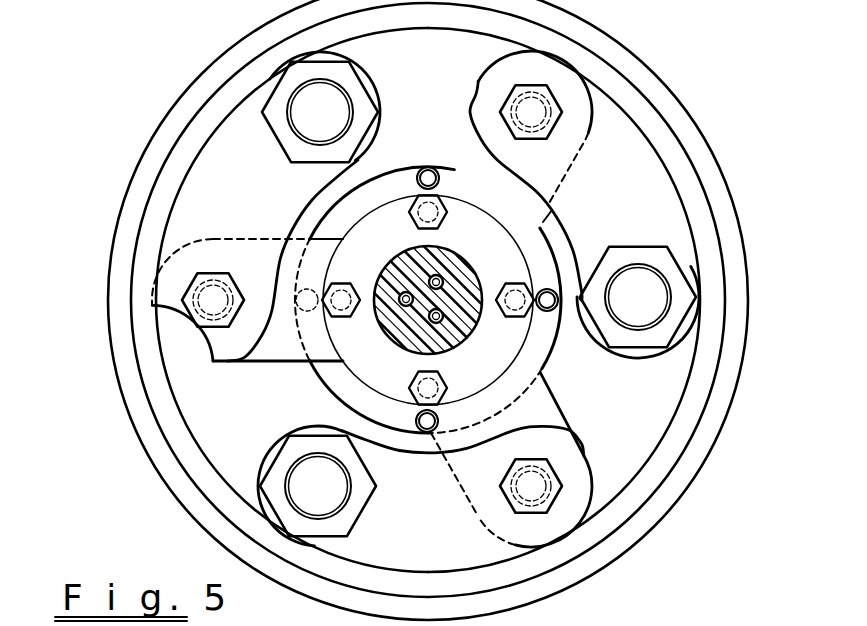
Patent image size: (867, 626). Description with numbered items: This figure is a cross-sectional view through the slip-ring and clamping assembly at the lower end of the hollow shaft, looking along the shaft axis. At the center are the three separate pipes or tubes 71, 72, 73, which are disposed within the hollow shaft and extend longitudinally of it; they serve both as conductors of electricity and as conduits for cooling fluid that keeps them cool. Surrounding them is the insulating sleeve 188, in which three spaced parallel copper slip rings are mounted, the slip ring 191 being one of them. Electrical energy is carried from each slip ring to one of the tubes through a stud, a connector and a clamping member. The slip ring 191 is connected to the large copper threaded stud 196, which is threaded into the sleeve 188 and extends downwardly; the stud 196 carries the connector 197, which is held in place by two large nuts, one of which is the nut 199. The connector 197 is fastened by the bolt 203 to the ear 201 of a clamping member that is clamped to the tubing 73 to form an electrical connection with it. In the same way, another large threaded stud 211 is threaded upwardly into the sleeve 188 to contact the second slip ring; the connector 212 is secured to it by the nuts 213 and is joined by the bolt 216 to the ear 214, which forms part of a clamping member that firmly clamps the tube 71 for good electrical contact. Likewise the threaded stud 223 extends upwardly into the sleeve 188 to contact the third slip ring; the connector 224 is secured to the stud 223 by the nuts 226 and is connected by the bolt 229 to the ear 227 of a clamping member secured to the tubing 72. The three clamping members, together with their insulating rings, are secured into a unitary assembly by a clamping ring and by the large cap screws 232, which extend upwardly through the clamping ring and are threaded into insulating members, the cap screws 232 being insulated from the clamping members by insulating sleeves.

The pipe or tube 71 is at (401, 307).
The pipe or tube 72 is at (441, 277).
The pipe or tube 73 is at (452, 334).
The insulating sleeve 188 is at (202, 490).
The slip ring 191 is at (158, 465).
The large threaded stud 196 is at (673, 290).
The connector 197 is at (666, 160).
The large nut 199 is at (678, 333).
The ear 201 is at (430, 167).
The bolt 203 is at (554, 90).
The large threaded stud 211 is at (333, 90).
The connector 212 is at (182, 180).
The nut 213 is at (280, 82).
The ear 214 is at (278, 348).
The bolt 216 is at (190, 308).
The threaded stud 223 is at (335, 498).
The connector 224 is at (438, 553).
The nut 226 is at (280, 513).
The ear 227 is at (560, 413).
The bolt 229 is at (548, 493).
The large cap screw 232 is at (412, 226).